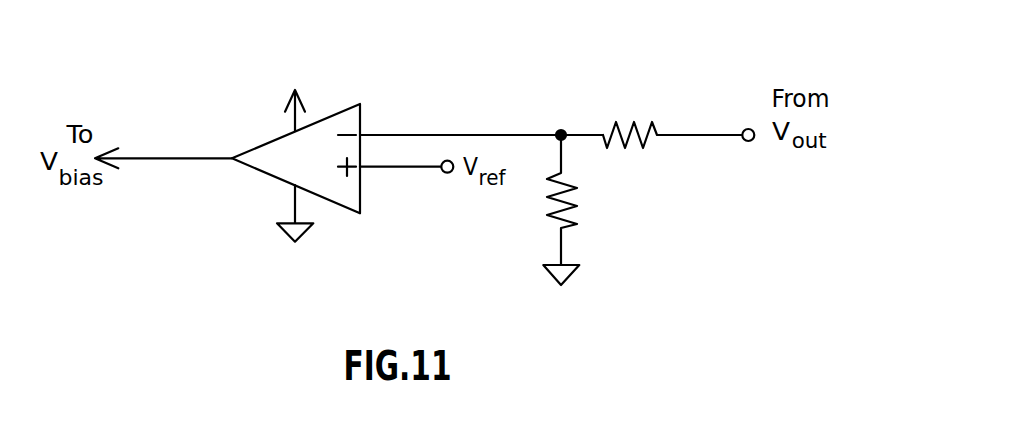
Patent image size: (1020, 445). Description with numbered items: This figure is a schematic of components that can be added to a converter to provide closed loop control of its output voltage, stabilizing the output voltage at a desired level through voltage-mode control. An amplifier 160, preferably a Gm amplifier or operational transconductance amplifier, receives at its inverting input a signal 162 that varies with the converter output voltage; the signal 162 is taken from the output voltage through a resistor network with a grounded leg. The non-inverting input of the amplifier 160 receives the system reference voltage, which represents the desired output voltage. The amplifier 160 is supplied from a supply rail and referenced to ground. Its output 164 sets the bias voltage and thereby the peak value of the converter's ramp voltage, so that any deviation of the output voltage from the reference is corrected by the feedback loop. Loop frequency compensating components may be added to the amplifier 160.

The amplifier 160 is at (336, 113).
The signal 162 is at (453, 135).
The output 164 is at (157, 158).